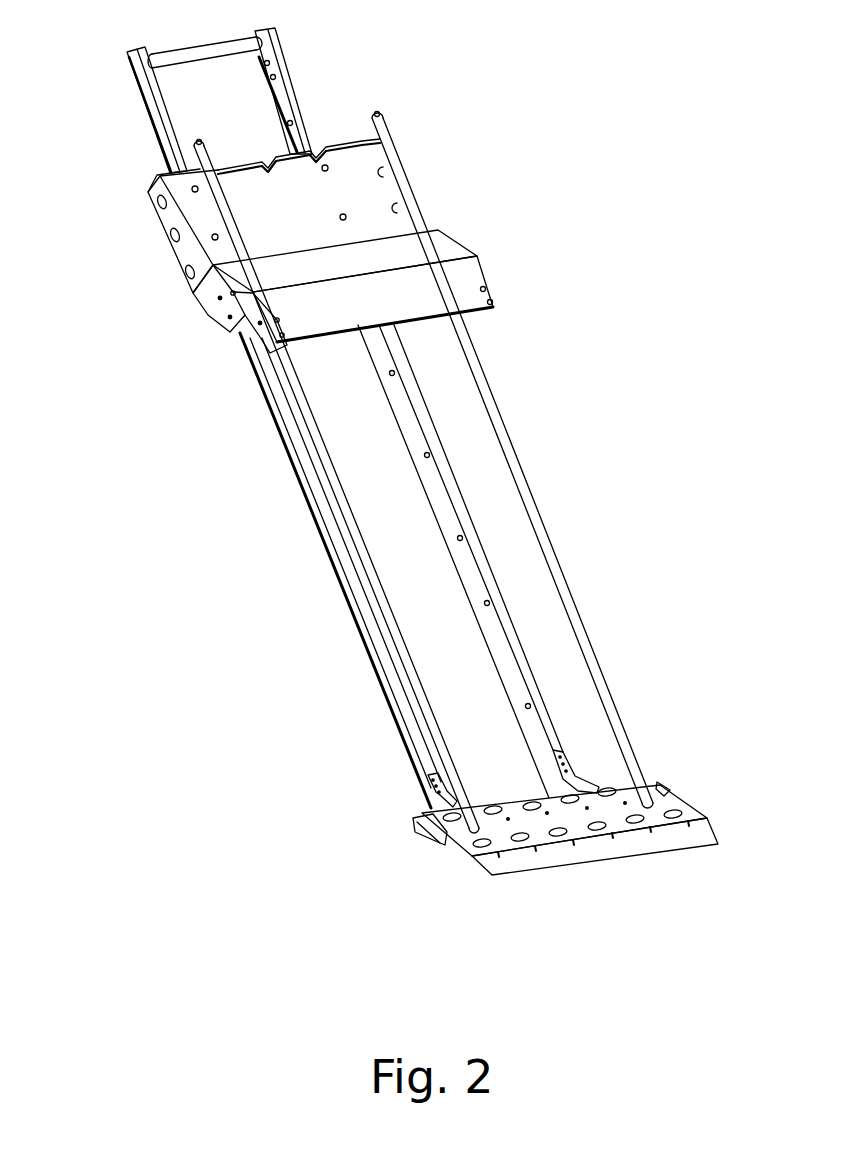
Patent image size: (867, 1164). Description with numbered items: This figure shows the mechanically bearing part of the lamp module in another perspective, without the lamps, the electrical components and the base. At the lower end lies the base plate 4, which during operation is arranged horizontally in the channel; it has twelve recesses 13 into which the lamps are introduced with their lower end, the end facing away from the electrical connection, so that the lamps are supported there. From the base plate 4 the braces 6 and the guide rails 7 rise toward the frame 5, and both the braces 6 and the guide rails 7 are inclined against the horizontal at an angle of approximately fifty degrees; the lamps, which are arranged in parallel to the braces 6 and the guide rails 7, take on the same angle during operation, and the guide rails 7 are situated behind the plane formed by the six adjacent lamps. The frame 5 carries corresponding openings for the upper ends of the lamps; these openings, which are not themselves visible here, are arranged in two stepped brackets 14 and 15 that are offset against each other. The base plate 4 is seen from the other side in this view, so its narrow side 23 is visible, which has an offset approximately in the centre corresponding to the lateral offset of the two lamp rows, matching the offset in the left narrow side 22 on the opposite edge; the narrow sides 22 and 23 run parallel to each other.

The base plate 4 is at (480, 857).
The frame 5 is at (168, 203).
The braces 6 is at (230, 222).
The guide rails 7 is at (285, 102).
The recesses 13 is at (560, 832).
The stepped bracket 14 is at (458, 278).
The stepped bracket 15 is at (210, 295).
The left narrow side 22 is at (660, 789).
The narrow side 23 is at (427, 823).